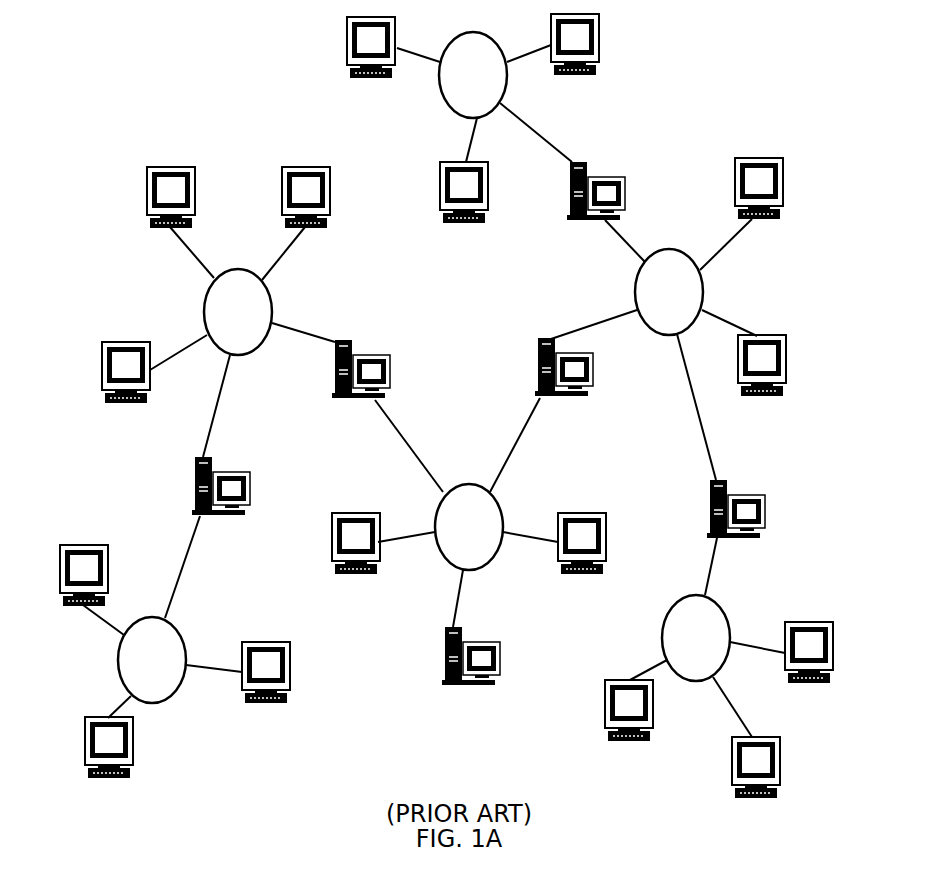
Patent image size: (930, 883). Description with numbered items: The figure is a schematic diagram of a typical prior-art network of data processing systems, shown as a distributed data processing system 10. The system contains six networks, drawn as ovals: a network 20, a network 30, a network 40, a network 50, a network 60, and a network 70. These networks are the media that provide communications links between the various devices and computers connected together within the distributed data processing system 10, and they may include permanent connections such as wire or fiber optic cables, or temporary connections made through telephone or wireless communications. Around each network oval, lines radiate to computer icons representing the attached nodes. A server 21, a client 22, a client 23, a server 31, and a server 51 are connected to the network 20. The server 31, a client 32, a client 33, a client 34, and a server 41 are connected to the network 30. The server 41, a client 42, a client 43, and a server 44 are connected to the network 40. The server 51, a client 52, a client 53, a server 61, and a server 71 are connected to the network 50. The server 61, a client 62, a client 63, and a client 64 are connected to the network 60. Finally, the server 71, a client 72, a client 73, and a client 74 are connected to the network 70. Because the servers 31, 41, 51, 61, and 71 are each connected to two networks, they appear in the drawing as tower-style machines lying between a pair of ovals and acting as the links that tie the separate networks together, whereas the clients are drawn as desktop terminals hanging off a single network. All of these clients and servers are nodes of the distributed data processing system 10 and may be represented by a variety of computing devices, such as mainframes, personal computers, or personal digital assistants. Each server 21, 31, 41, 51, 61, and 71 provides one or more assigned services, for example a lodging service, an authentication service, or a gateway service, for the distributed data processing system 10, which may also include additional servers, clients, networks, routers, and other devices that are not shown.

The distributed data processing system 10 is at (779, 47).
The network 20 is at (458, 538).
The server 21 is at (445, 655).
The client 22 is at (332, 541).
The client 23 is at (606, 537).
The network 30 is at (227, 323).
The server 31 is at (335, 378).
The client 32 is at (102, 372).
The client 33 is at (147, 196).
The client 34 is at (331, 192).
The network 40 is at (141, 671).
The server 41 is at (195, 484).
The client 42 is at (291, 670).
The client 43 is at (85, 746).
The server 44 is at (60, 574).
The network 50 is at (658, 303).
The server 51 is at (538, 366).
The client 52 is at (784, 186).
The client 53 is at (787, 362).
The network 60 is at (685, 649).
The server 61 is at (765, 506).
The client 62 is at (835, 650).
The client 63 is at (781, 766).
The client 64 is at (605, 709).
The network 70 is at (462, 86).
The server 71 is at (570, 190).
The client 72 is at (440, 192).
The client 73 is at (347, 48).
The client 74 is at (599, 45).